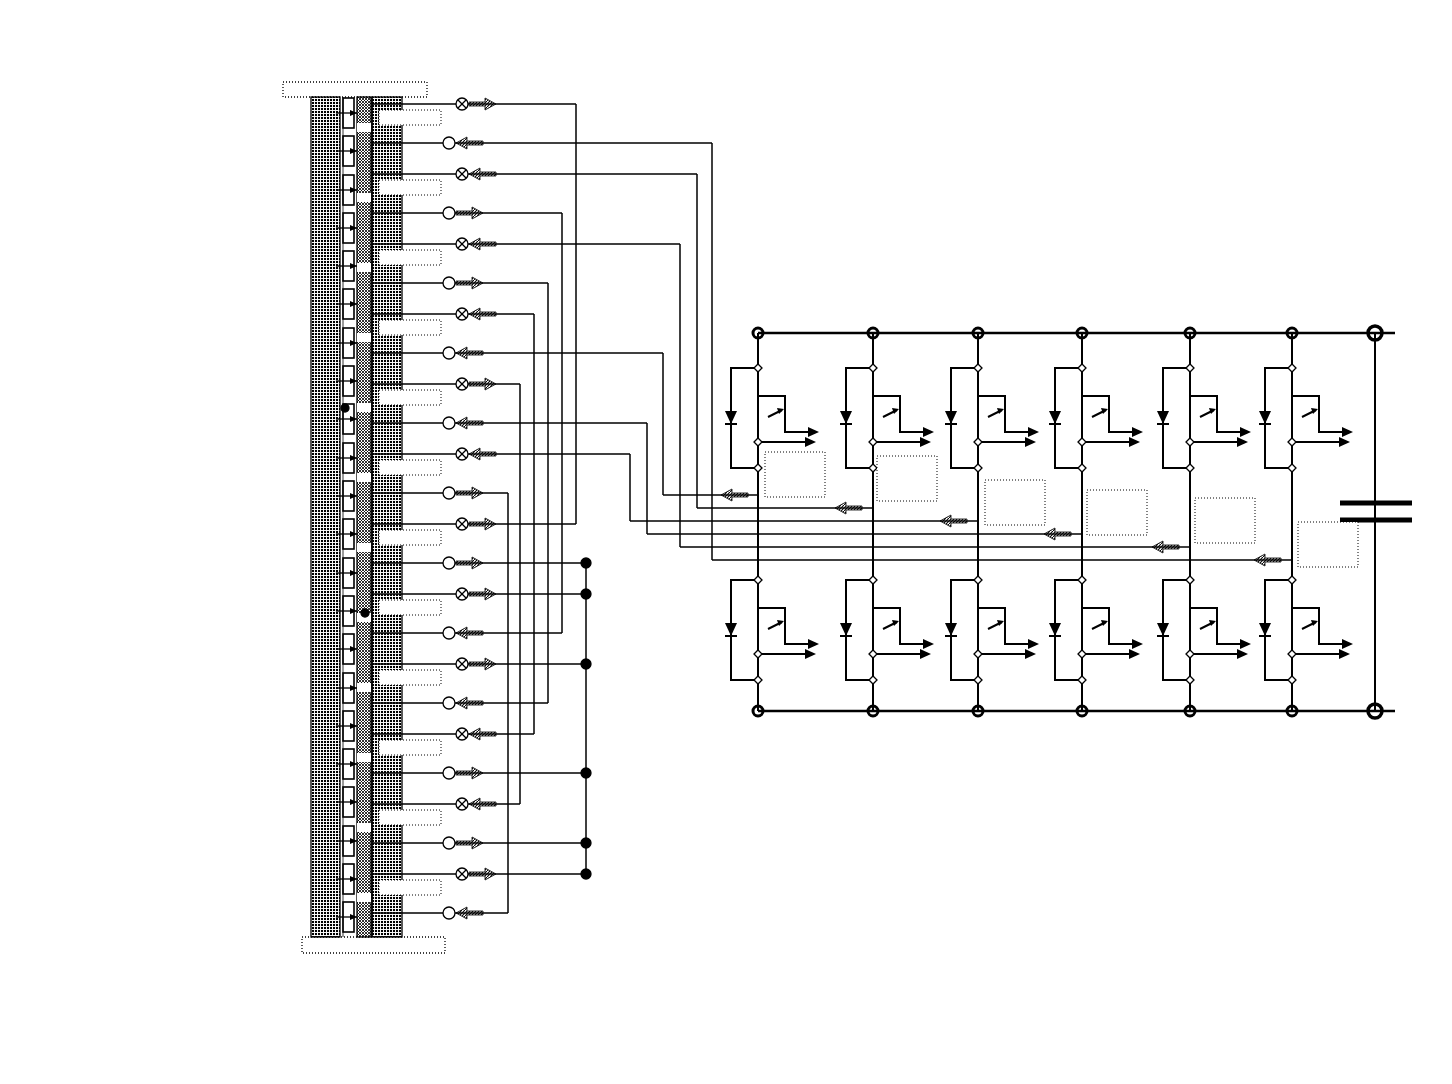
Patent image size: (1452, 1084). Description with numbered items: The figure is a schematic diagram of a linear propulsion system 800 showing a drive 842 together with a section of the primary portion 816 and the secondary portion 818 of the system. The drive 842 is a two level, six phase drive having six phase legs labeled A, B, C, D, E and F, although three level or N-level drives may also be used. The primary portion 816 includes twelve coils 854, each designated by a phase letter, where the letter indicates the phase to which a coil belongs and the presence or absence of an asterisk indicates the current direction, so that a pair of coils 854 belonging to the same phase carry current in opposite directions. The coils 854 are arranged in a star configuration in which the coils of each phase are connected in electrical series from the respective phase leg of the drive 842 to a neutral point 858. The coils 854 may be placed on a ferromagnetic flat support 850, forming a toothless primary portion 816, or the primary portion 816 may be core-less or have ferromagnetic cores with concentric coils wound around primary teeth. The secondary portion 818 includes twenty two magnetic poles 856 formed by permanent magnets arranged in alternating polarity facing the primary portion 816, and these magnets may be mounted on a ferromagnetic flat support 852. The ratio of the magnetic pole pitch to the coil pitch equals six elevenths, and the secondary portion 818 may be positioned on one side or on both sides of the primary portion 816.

The linear propulsion system 800 is at (1286, 83).
The primary portion 816 is at (372, 88).
The secondary portion 818 is at (338, 90).
The drive 842 is at (1167, 262).
The ferromagnetic flat support 850 is at (396, 158).
The ferromagnetic flat support 852 is at (318, 281).
The coil 854 is at (365, 613).
The magnetic pole 856 is at (345, 408).
The neutral point 858 is at (591, 826).